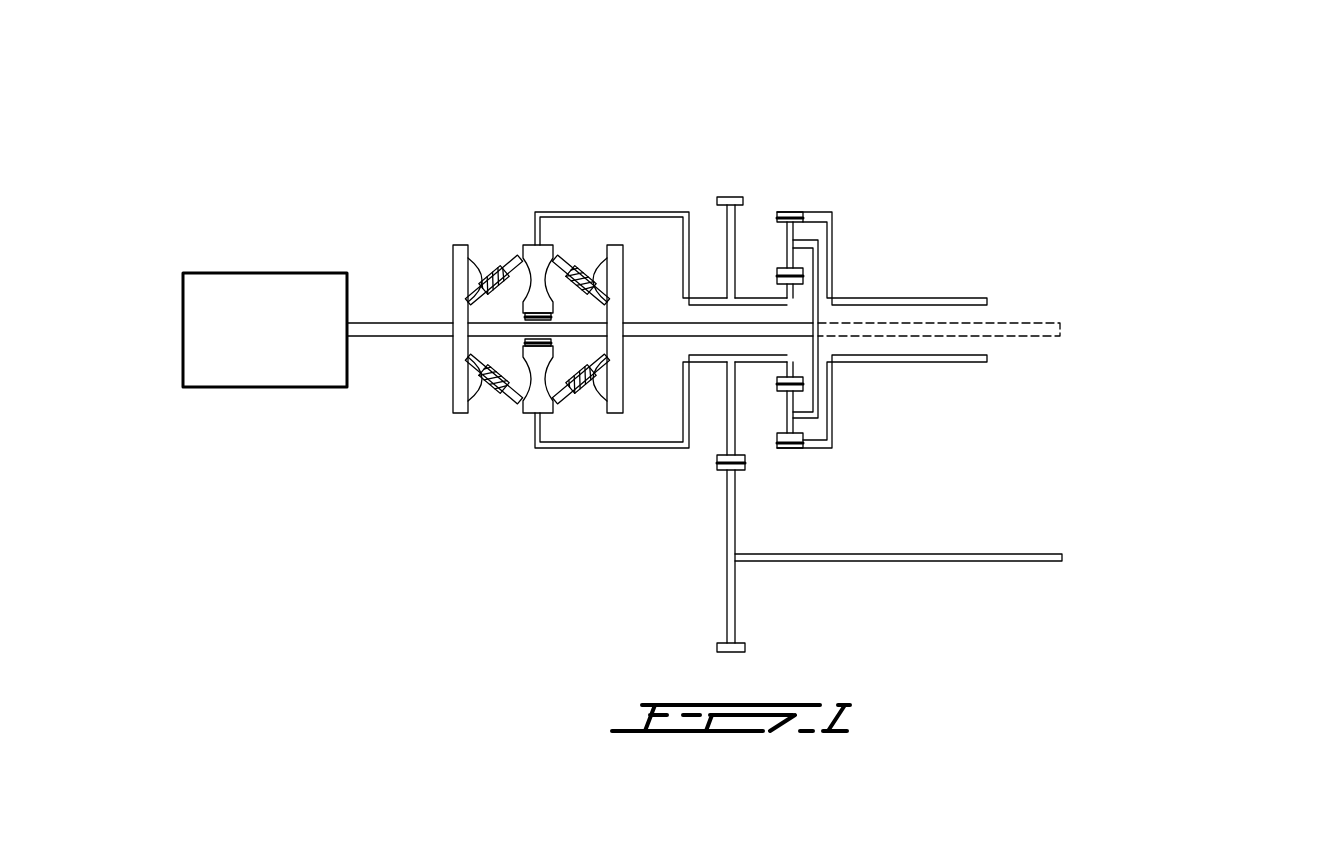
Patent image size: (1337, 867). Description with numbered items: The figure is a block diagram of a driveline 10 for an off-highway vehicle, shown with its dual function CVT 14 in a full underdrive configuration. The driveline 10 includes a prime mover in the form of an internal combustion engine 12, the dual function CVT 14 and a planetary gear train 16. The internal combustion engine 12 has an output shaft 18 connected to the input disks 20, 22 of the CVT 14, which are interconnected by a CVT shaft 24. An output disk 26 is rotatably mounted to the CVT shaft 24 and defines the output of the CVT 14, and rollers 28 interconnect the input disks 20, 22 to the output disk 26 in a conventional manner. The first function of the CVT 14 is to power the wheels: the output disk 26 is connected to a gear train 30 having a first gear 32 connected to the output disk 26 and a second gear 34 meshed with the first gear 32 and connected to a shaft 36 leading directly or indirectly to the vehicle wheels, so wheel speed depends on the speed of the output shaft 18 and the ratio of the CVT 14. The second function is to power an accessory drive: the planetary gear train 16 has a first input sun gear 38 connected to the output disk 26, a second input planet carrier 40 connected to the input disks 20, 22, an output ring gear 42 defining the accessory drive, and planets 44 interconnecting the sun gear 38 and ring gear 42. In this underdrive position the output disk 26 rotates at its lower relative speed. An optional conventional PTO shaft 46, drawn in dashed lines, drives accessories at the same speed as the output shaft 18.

The driveline 10 is at (776, 106).
The internal combustion engine 12 is at (254, 391).
The dual function CVT 14 is at (487, 510).
The planetary gear train 16 is at (829, 190).
The output shaft 18 is at (386, 338).
The input disk 20 is at (461, 415).
The input disk 22 is at (616, 415).
The CVT shaft 24 is at (478, 331).
The output disk 26 is at (536, 406).
The rollers 28 is at (586, 278).
The gear train 30 is at (712, 476).
The first gear 32 is at (735, 427).
The second gear 34 is at (735, 597).
The shaft 36 is at (931, 556).
The sun gear 38 is at (790, 290).
The planet carrier 40 is at (815, 265).
The ring gear 42 is at (800, 449).
The planets 44 is at (790, 238).
The PTO shaft 46 is at (1033, 338).